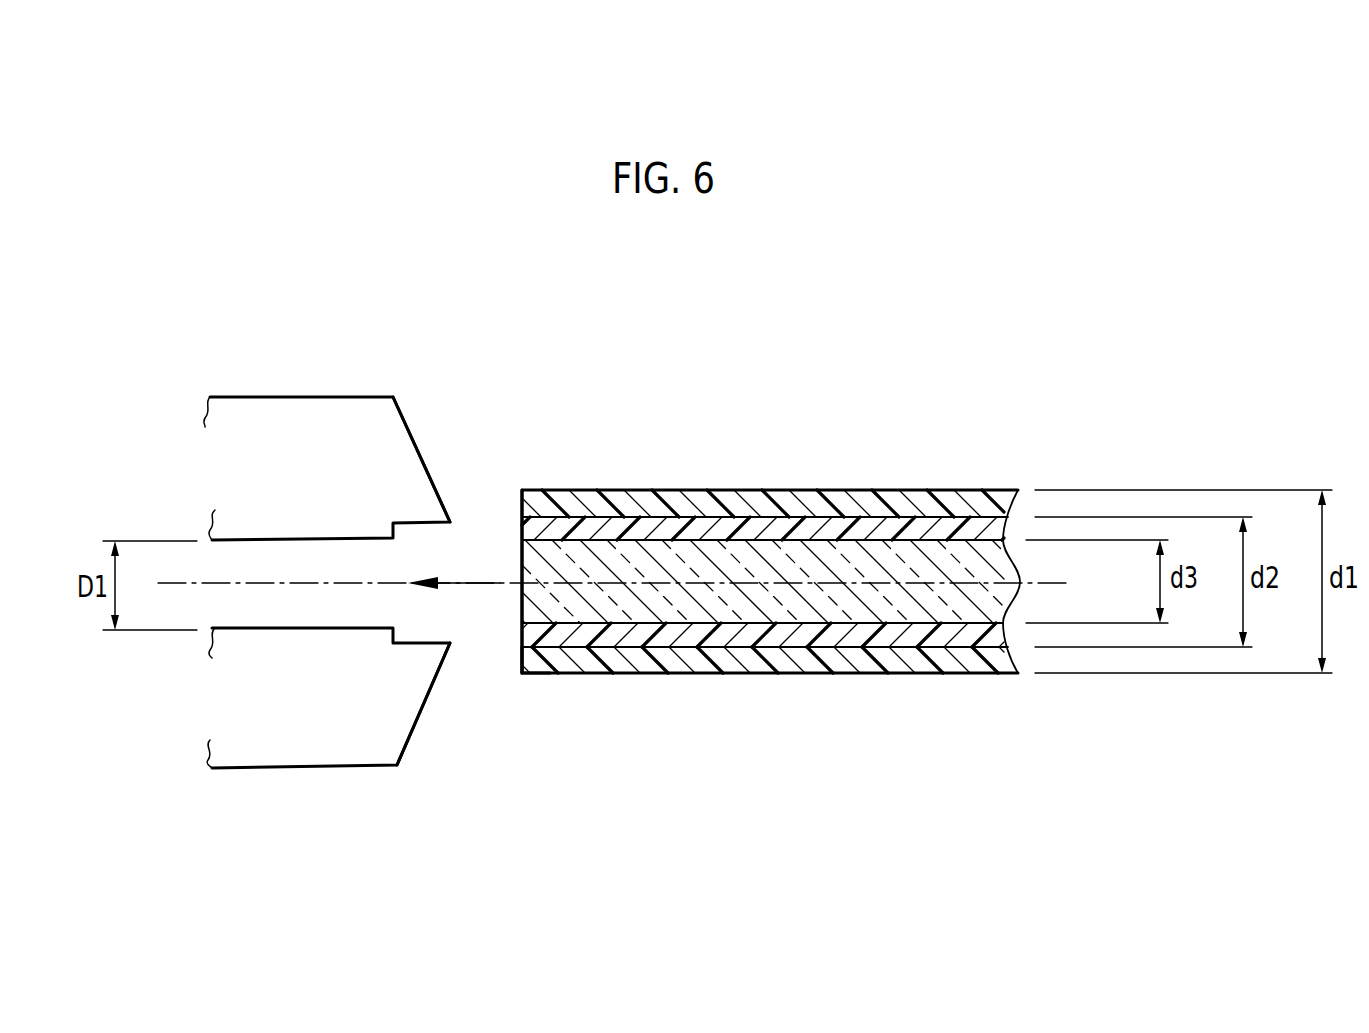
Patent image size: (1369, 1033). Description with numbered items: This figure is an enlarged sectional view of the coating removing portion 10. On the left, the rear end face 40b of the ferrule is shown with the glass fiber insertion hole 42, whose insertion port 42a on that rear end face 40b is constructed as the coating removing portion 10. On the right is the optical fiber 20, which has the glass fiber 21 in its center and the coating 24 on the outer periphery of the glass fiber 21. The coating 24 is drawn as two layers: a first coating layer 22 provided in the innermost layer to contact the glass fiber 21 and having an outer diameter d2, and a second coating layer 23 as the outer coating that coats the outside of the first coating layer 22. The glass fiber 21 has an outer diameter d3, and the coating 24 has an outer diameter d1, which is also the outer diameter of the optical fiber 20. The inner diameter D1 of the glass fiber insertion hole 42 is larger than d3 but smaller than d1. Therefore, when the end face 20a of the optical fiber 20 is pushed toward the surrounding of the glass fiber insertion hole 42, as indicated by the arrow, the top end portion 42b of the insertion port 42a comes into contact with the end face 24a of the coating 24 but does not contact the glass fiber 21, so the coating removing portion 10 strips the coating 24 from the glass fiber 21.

The coating removing portion 10 is at (362, 228).
The optical fiber 20 is at (902, 496).
The end face of the optical fiber 20a is at (518, 543).
The glass fiber 21 is at (1000, 572).
The first coating layer 22 is at (1005, 528).
The second coating layer 23 is at (960, 488).
The coating 24 is at (861, 496).
The end face of the coating 24a is at (523, 658).
The rear end face of the ferrule 40b is at (412, 738).
The glass fiber insertion hole 42 is at (292, 562).
The insertion port 42a is at (430, 547).
The top end portion of the insertion port 42b is at (453, 641).